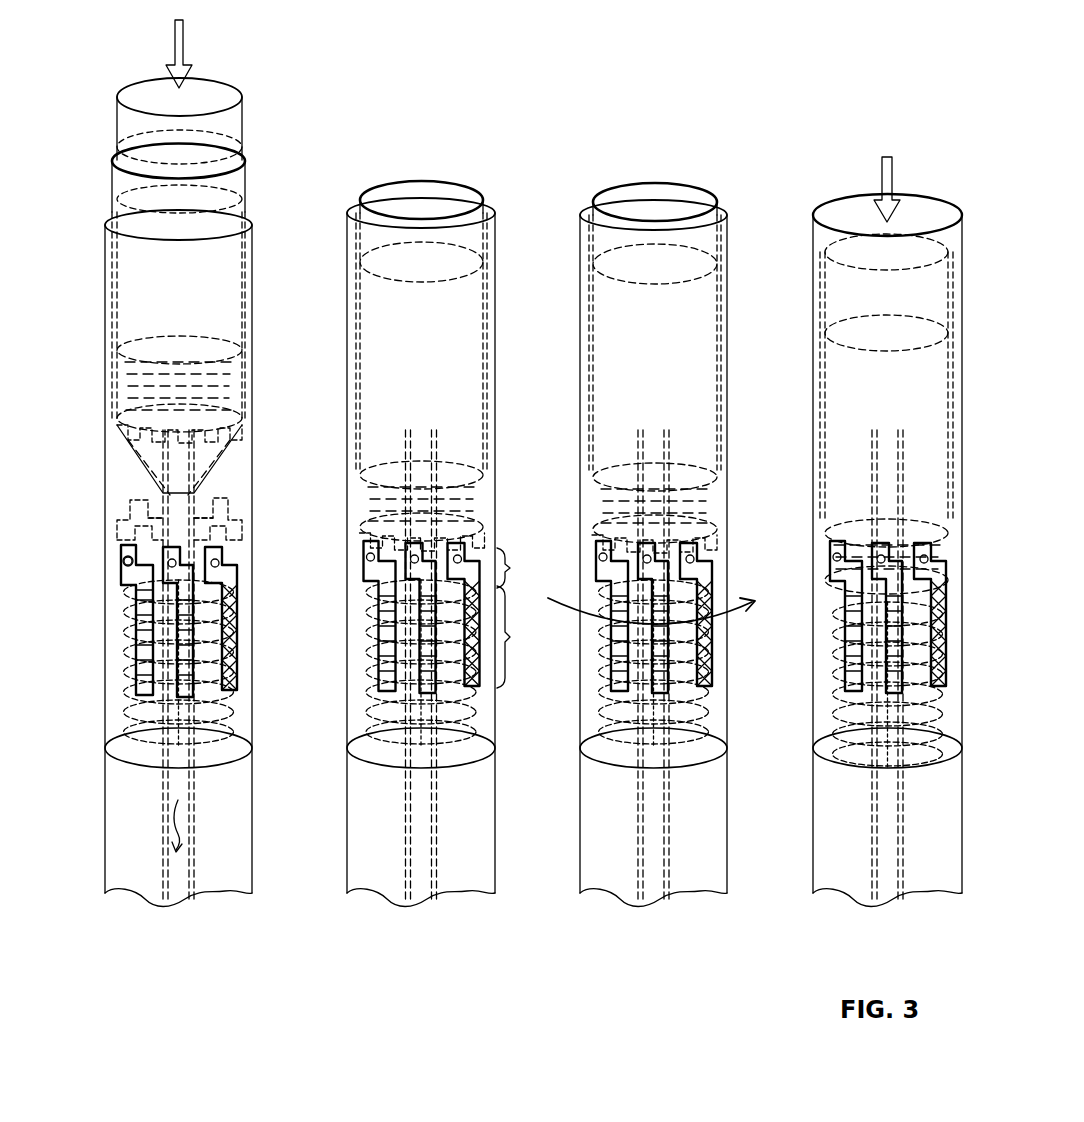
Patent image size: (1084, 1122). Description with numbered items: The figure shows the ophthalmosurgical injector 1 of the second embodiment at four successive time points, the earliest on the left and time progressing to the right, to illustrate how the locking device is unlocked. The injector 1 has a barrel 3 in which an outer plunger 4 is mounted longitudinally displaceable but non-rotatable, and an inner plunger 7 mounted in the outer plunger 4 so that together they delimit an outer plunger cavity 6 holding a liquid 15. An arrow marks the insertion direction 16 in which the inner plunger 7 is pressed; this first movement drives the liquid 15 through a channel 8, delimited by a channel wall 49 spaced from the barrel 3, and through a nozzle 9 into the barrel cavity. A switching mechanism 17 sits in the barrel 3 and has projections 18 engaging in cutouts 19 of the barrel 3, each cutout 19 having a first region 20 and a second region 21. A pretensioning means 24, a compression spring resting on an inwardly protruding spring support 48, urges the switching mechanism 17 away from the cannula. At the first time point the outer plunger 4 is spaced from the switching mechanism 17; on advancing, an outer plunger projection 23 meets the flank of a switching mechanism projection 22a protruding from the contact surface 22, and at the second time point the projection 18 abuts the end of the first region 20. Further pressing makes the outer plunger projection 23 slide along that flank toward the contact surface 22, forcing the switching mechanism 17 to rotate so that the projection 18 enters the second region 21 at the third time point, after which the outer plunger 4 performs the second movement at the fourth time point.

The ophthalmosurgical injector 1 is at (88, 142).
The barrel 3 is at (105, 290).
The outer plunger 4 is at (248, 178).
The outer plunger cavity 6 is at (222, 371).
The inner plunger 7 is at (243, 122).
The channel 8 is at (182, 848).
The nozzle 9 is at (140, 468).
The liquid 15 is at (178, 386).
The insertion direction 16 is at (186, 35).
The switching mechanism 17 is at (240, 568).
The projection 18 is at (123, 561).
The cutout 19 is at (136, 660).
The first region 20 is at (523, 568).
The second region 21 is at (523, 637).
The contact surface 22 is at (130, 538).
The switching mechanism projection 22a is at (230, 535).
The outer plunger projection 23 is at (210, 438).
The pretensioning means 24 is at (235, 710).
The spring support 48 is at (135, 765).
The channel wall 49 is at (194, 802).